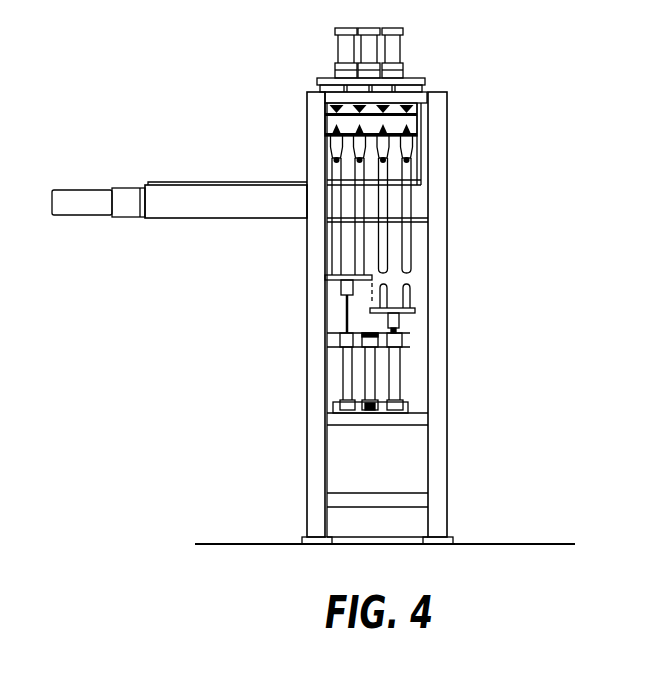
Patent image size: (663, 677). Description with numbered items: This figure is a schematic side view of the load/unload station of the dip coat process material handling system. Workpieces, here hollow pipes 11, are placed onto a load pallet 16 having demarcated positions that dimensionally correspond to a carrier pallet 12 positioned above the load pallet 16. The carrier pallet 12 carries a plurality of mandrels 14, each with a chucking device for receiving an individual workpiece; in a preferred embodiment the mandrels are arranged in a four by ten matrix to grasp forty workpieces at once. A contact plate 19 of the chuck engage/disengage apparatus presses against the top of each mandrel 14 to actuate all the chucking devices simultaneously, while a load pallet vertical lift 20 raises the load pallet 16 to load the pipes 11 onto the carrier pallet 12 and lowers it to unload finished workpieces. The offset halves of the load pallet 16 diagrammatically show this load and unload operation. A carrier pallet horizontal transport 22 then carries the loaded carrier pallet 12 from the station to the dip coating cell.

The contact plate 19 is at (413, 113).
The carrier pallet 12 is at (402, 135).
The mandrel 14 is at (408, 163).
The hollow pipe 11 is at (403, 242).
The load pallet 16 is at (413, 310).
The load pallet vertical lift 20 is at (416, 371).
The carrier pallet horizontal transport 22 is at (228, 190).